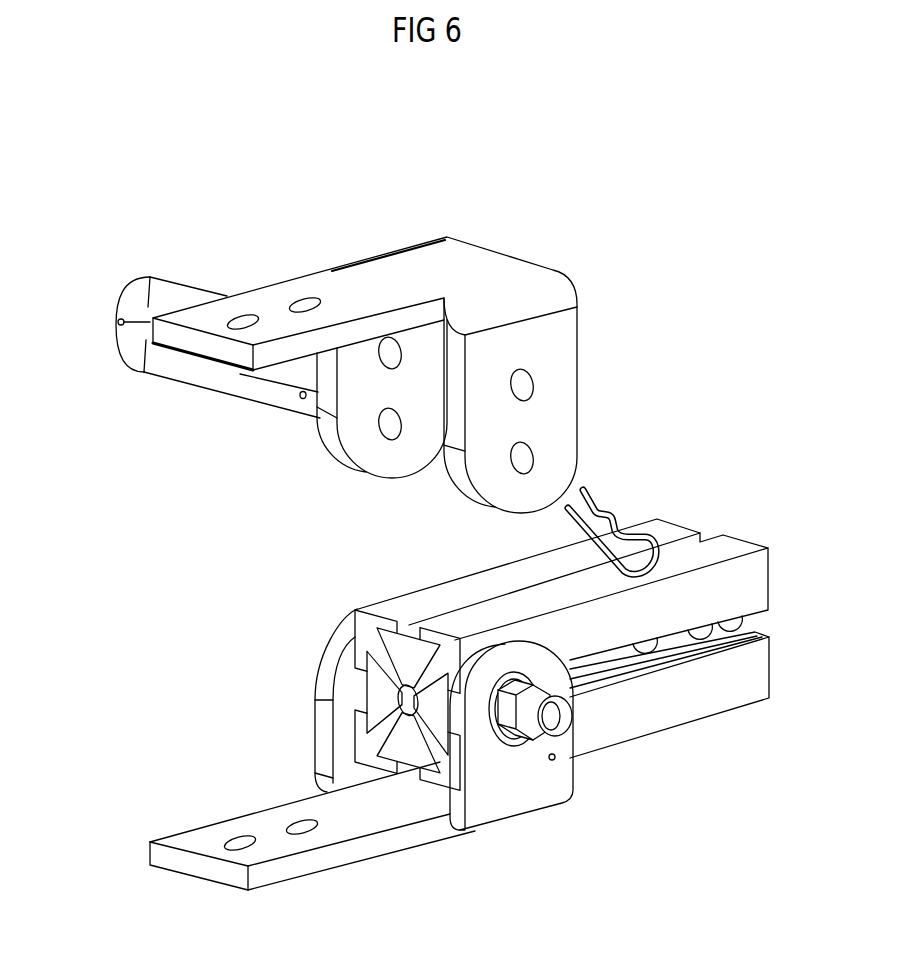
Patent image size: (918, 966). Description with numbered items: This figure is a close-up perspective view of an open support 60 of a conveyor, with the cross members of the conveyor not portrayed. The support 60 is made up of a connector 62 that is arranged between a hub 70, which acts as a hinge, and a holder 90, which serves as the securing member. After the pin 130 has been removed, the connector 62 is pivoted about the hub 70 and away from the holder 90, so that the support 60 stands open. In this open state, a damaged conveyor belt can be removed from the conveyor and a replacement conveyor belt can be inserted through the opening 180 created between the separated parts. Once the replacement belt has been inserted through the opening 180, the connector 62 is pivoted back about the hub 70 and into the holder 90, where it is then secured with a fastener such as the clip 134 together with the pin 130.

The support 60 is at (633, 327).
The connector 62 is at (657, 722).
The hub 70 is at (342, 878).
The holder 90 is at (372, 252).
The pin 130 is at (177, 290).
The clip 134 is at (613, 510).
The opening 180 is at (686, 458).